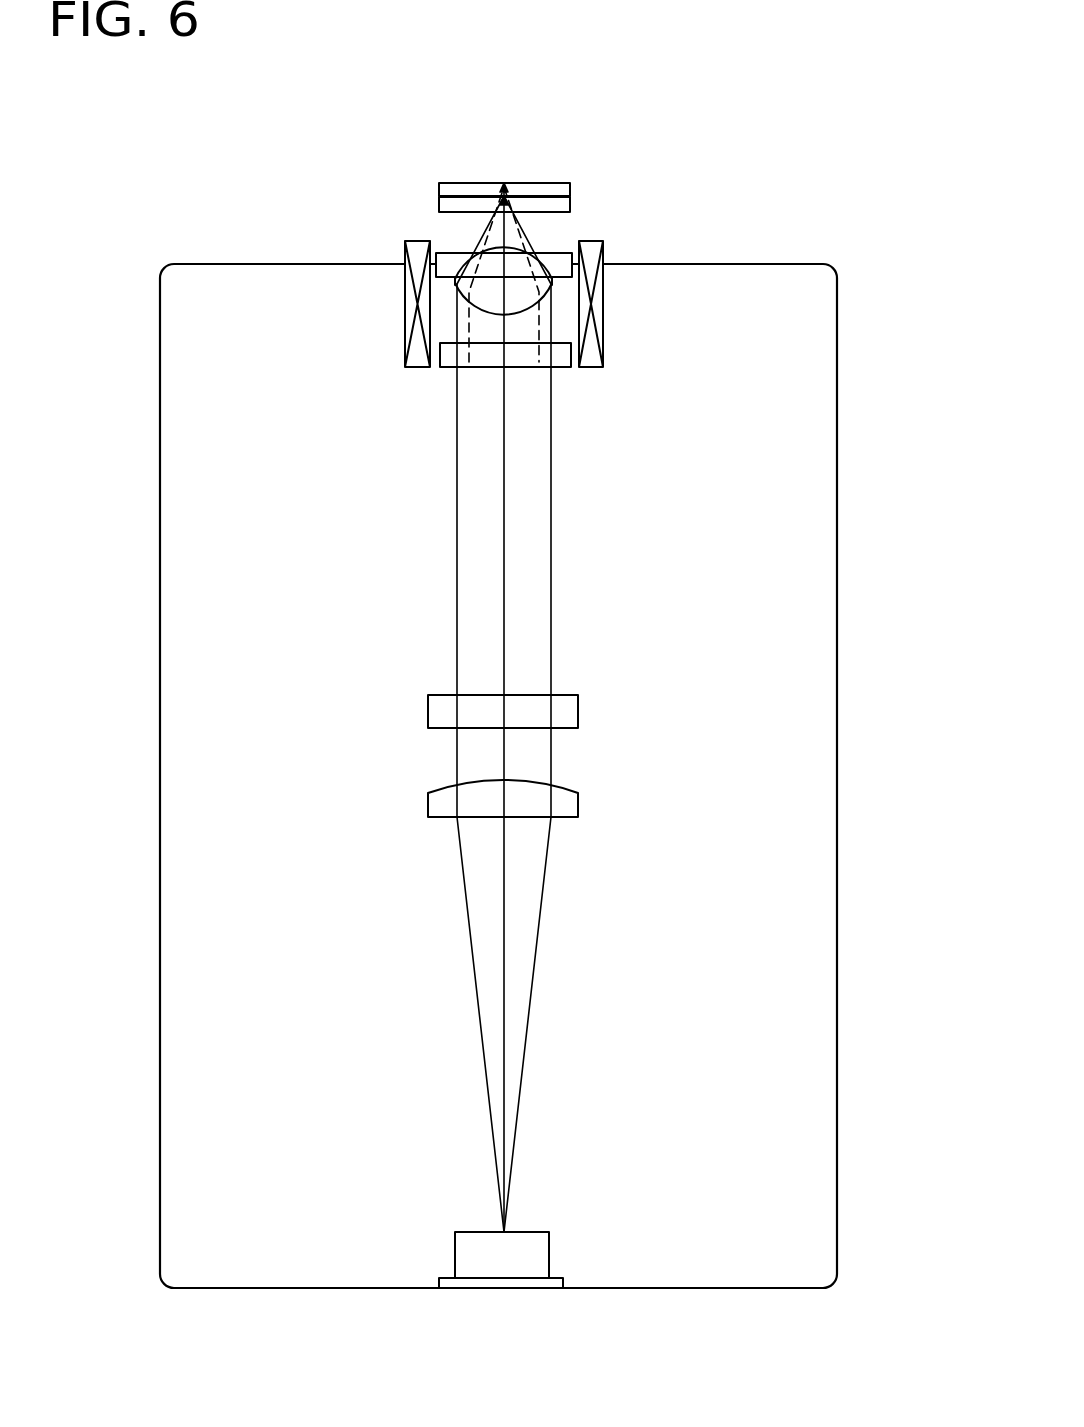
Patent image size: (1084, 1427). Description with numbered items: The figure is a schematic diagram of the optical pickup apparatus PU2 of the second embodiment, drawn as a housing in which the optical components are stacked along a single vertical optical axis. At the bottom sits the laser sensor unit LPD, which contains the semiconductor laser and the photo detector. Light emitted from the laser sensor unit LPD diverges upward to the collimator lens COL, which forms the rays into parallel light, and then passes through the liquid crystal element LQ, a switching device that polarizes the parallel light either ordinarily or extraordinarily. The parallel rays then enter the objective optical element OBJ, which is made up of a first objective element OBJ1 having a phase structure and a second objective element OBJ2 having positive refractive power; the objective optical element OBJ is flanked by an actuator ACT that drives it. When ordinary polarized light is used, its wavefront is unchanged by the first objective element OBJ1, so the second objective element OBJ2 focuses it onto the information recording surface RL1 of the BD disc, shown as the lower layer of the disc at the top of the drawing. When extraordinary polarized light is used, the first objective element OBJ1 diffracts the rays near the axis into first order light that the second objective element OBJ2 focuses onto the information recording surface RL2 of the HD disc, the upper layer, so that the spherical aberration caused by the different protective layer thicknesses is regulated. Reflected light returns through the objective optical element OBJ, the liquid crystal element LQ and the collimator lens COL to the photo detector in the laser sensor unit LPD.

The optical pickup apparatus PU2 is at (837, 317).
The information recording surface RL2 is at (470, 183).
The information recording surface RL1 is at (553, 197).
The actuator ACT is at (405, 250).
The objective optical element OBJ is at (406, 316).
The second objective optical element OBJ2 is at (482, 293).
The first objective optical element OBJ1 is at (440, 355).
The liquid crystal element LQ is at (440, 710).
The collimator lens COL is at (440, 798).
The laser sensor unit LPD is at (478, 1290).